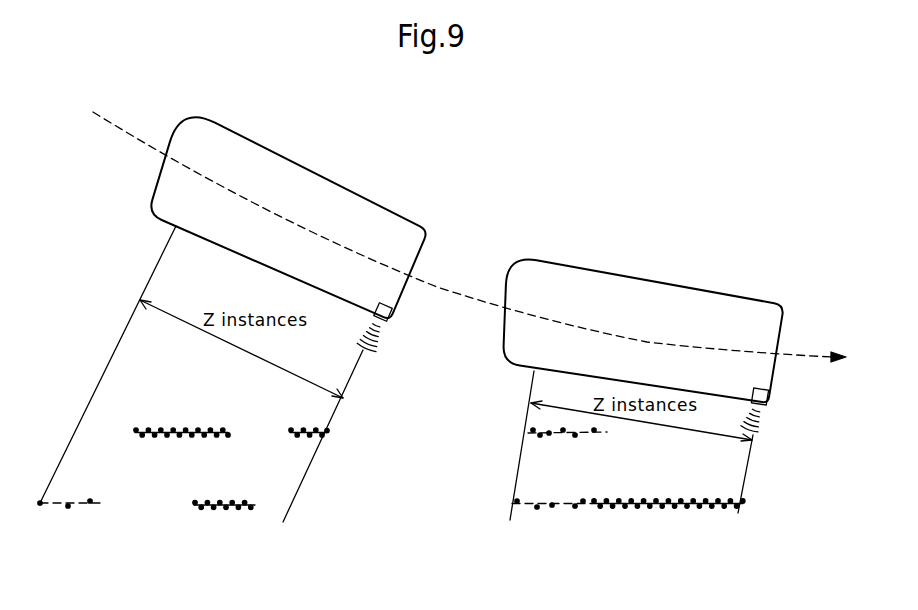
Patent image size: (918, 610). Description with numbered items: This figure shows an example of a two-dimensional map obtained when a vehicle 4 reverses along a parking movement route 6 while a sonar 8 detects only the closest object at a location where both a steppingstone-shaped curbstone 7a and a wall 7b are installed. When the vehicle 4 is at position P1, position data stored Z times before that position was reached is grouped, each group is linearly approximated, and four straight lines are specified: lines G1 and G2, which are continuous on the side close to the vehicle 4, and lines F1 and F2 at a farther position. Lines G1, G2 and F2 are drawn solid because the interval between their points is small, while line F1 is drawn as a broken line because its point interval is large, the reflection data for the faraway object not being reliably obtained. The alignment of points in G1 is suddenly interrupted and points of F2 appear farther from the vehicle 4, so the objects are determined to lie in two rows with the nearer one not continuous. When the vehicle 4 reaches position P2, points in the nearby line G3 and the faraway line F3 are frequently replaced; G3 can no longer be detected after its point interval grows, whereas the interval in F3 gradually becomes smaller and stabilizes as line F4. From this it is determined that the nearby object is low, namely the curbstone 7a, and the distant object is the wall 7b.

The vehicle 4 is at (466, 259).
The parking movement route 6 is at (458, 292).
The sonar 8 is at (391, 318).
The curbstone 7a is at (208, 429).
The wall 7b is at (648, 502).
The position P1 is at (288, 217).
The position P2 is at (643, 325).
The line G1 is at (205, 430).
The line G2 is at (315, 437).
The line G3 is at (587, 436).
The line F1 is at (81, 508).
The line F2 is at (238, 510).
The line F3 is at (540, 500).
The line F4 is at (713, 507).